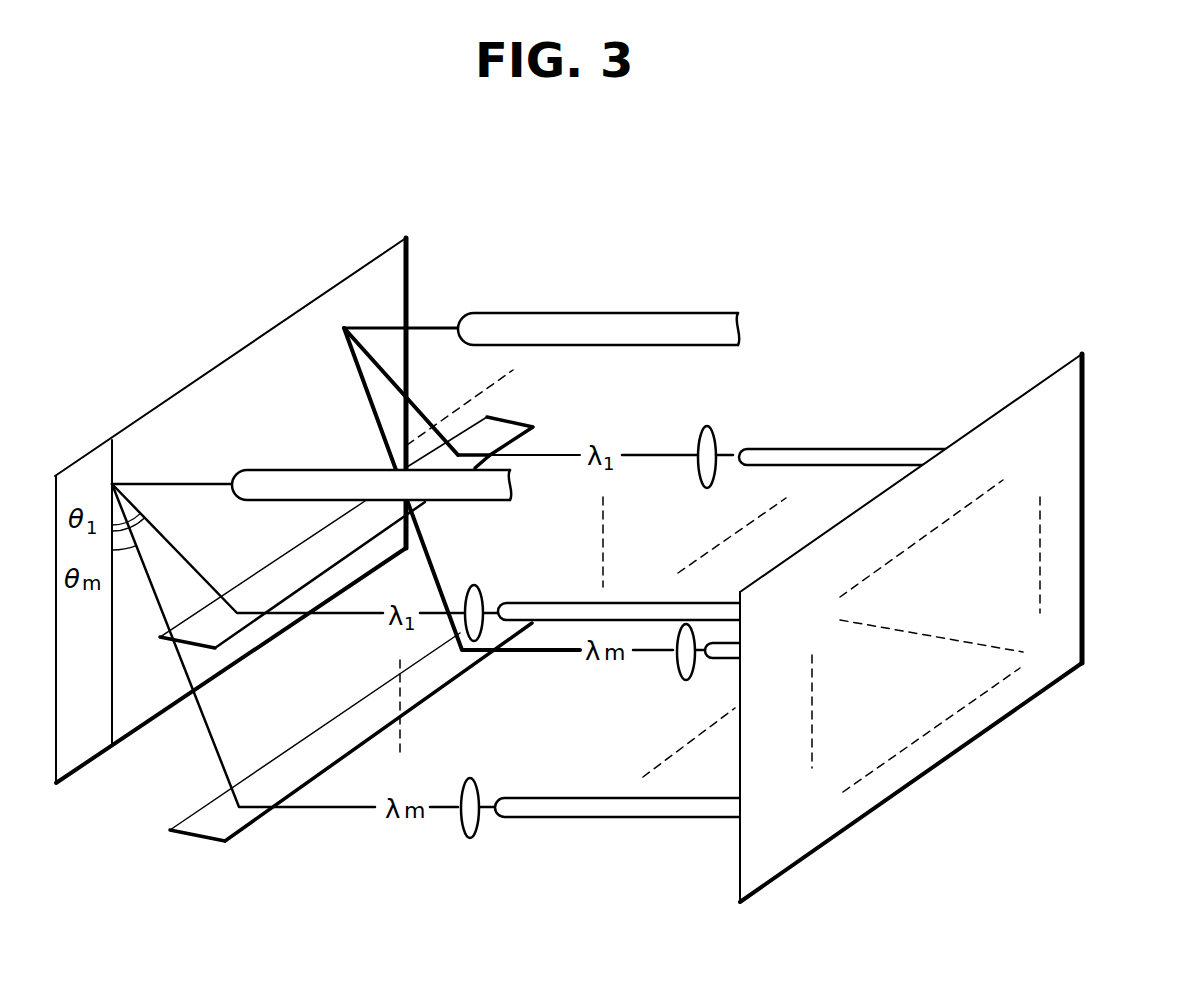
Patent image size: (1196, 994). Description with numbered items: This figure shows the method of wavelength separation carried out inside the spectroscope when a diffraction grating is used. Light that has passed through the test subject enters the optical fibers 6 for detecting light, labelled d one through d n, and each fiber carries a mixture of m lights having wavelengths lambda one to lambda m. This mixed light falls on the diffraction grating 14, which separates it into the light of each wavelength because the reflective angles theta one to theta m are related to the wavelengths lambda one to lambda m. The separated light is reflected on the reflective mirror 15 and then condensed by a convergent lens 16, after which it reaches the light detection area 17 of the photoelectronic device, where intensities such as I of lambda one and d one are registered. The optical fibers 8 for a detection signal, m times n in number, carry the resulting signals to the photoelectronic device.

The optical fibers for detecting light 6 is at (666, 322).
The optical fibers for a detection signal 8 is at (855, 448).
The diffraction grating 14 is at (324, 305).
The reflective mirror 15 is at (500, 430).
The convergent lens 16 is at (712, 446).
The light detection area 17 is at (1006, 420).